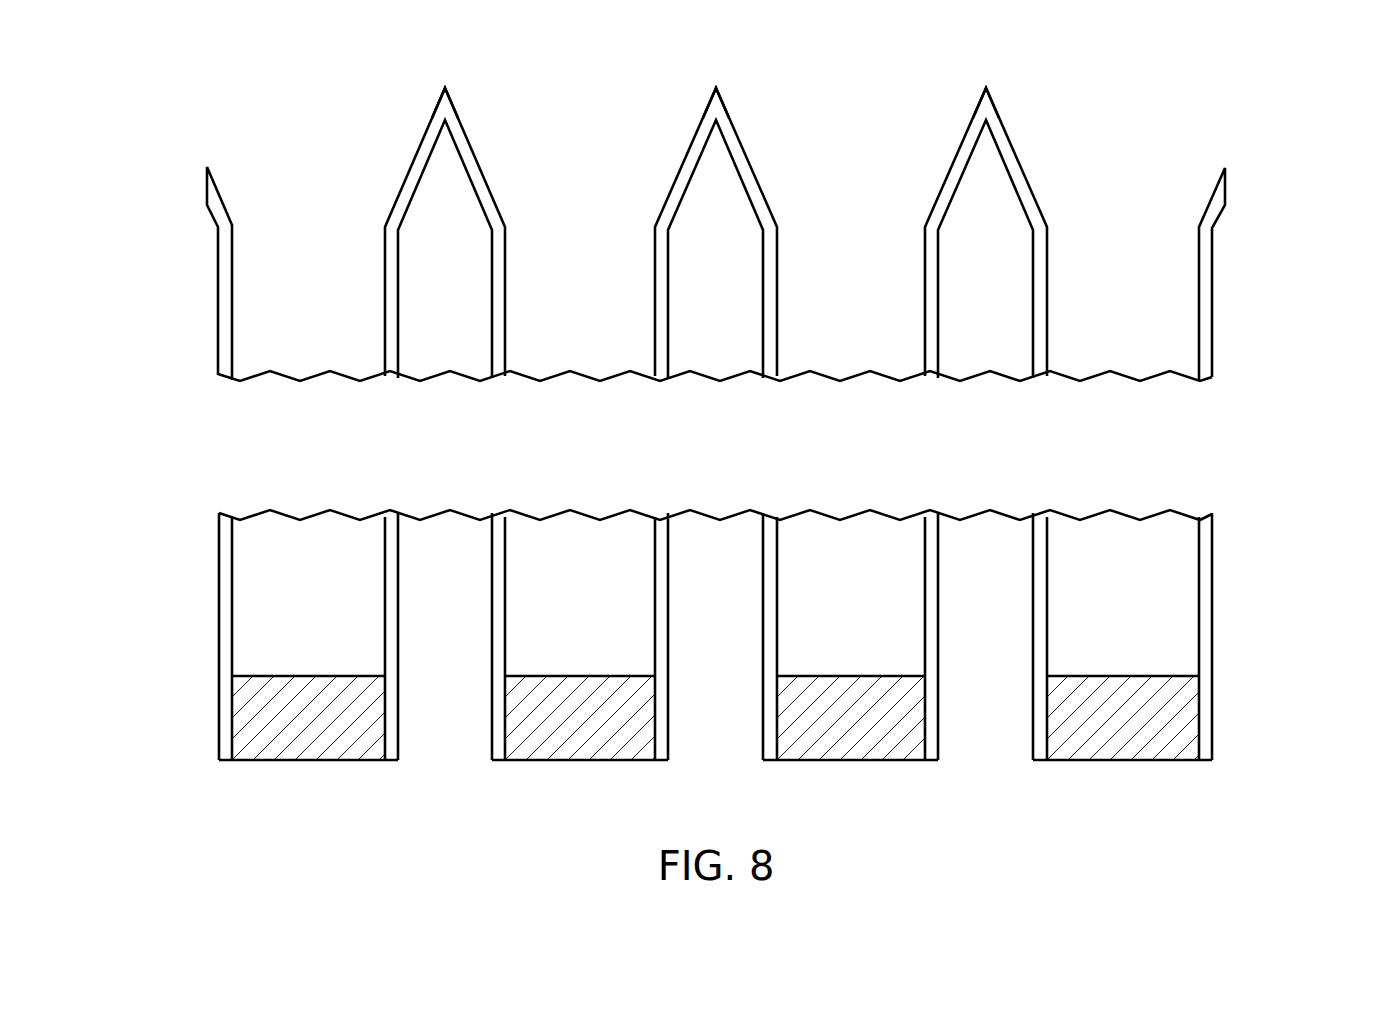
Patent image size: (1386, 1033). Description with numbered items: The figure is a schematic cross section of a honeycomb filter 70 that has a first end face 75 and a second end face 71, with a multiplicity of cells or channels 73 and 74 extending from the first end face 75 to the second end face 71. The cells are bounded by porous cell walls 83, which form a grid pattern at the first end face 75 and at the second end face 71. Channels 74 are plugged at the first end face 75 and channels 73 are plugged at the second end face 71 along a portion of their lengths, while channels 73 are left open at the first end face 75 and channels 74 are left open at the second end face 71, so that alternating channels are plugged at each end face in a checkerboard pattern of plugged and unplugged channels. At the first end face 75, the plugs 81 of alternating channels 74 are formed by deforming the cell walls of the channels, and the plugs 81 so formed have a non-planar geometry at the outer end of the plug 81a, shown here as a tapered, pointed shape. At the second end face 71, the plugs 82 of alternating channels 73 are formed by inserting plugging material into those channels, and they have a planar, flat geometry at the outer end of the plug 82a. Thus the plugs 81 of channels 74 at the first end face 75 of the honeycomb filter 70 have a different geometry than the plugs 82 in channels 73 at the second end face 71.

The honeycomb filter 70 is at (1145, 80).
The second end face 71 is at (1262, 582).
The channels 73 is at (293, 317).
The channels 74 is at (426, 317).
The first end face 75 is at (1263, 191).
The plugs 81 is at (412, 158).
The outer end of the plug 81a is at (445, 88).
The plugs 82 is at (398, 723).
The outer end of the plug 82a is at (305, 760).
The porous cell walls 83 is at (505, 265).